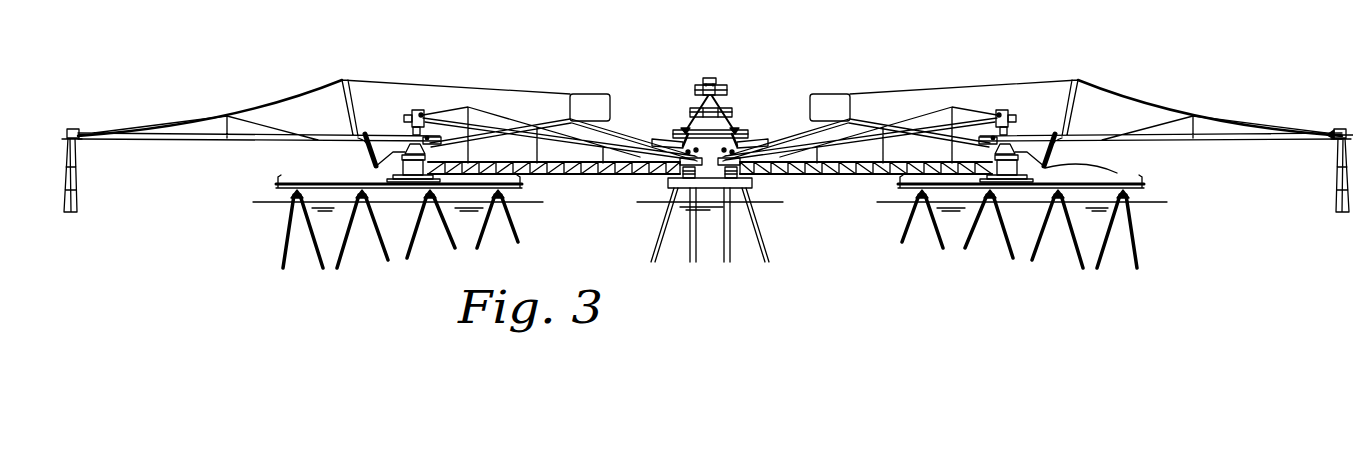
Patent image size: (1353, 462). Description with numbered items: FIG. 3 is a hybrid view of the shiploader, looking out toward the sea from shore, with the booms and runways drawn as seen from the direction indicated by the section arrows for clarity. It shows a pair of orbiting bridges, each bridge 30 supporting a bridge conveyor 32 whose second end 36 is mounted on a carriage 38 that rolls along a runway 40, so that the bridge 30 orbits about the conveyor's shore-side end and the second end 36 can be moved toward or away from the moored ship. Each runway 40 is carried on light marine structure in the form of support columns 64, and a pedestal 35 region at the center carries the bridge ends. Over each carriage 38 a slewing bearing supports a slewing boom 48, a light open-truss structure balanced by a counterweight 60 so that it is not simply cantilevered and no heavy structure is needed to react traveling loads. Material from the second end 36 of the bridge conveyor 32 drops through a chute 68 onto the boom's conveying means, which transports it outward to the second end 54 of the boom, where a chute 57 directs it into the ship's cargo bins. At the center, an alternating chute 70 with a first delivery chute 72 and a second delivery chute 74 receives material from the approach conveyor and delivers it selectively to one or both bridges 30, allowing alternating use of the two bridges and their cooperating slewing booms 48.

The bridge 30 is at (587, 177).
The bridge conveyor means 32 is at (615, 137).
The bearing support 35 is at (678, 168).
The second end of the bridge conveyor 36 is at (422, 117).
The carriage 38 is at (383, 180).
The runway 40 is at (278, 192).
The slewing boom 48 is at (222, 141).
The second end of the slewing boom 54 is at (1318, 133).
The chute 57 is at (75, 212).
The counterweight 60 is at (578, 94).
The support columns 64 is at (766, 258).
The chute 68 is at (411, 124).
The alternating chute 70 is at (710, 77).
The first delivery chute 72 is at (683, 122).
The second delivery chute 74 is at (728, 119).